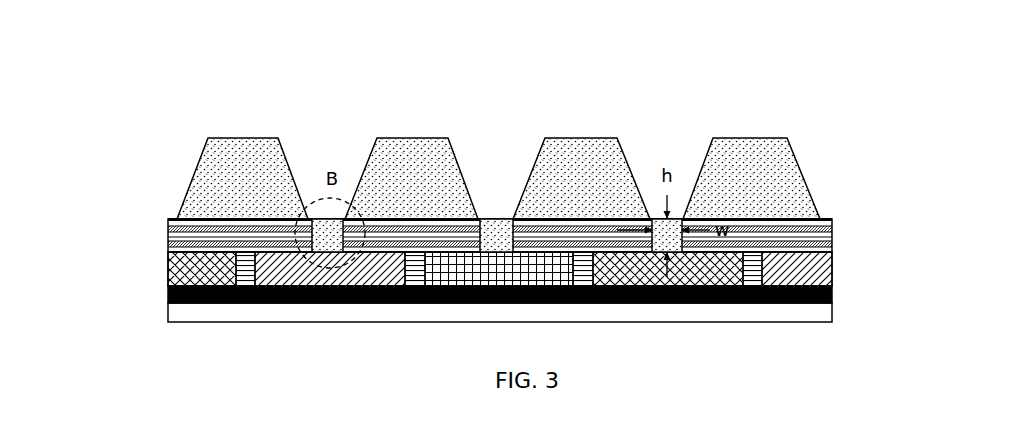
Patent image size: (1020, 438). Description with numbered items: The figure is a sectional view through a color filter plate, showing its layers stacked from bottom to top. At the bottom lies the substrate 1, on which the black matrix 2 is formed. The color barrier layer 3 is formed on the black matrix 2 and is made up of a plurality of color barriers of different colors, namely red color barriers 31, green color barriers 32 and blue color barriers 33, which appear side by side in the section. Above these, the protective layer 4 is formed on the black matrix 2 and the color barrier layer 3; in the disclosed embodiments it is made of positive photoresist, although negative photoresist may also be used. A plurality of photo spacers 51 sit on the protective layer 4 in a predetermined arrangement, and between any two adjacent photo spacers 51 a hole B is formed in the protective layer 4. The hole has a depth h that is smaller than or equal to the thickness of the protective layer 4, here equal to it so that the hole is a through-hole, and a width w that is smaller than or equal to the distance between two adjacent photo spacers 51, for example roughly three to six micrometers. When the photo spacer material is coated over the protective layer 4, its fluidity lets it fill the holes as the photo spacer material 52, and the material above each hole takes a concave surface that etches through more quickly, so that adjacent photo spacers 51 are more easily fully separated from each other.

The substrate 1 is at (832, 322).
The black matrix 2 is at (832, 295).
The color barrier layer 3 is at (479, 176).
The red color barriers 31 is at (779, 267).
The green color barriers 32 is at (497, 218).
The blue color barriers 33 is at (168, 270).
The protective layer 4 is at (832, 222).
The photo spacers 51 is at (790, 152).
The photo spacer material 52 is at (654, 218).